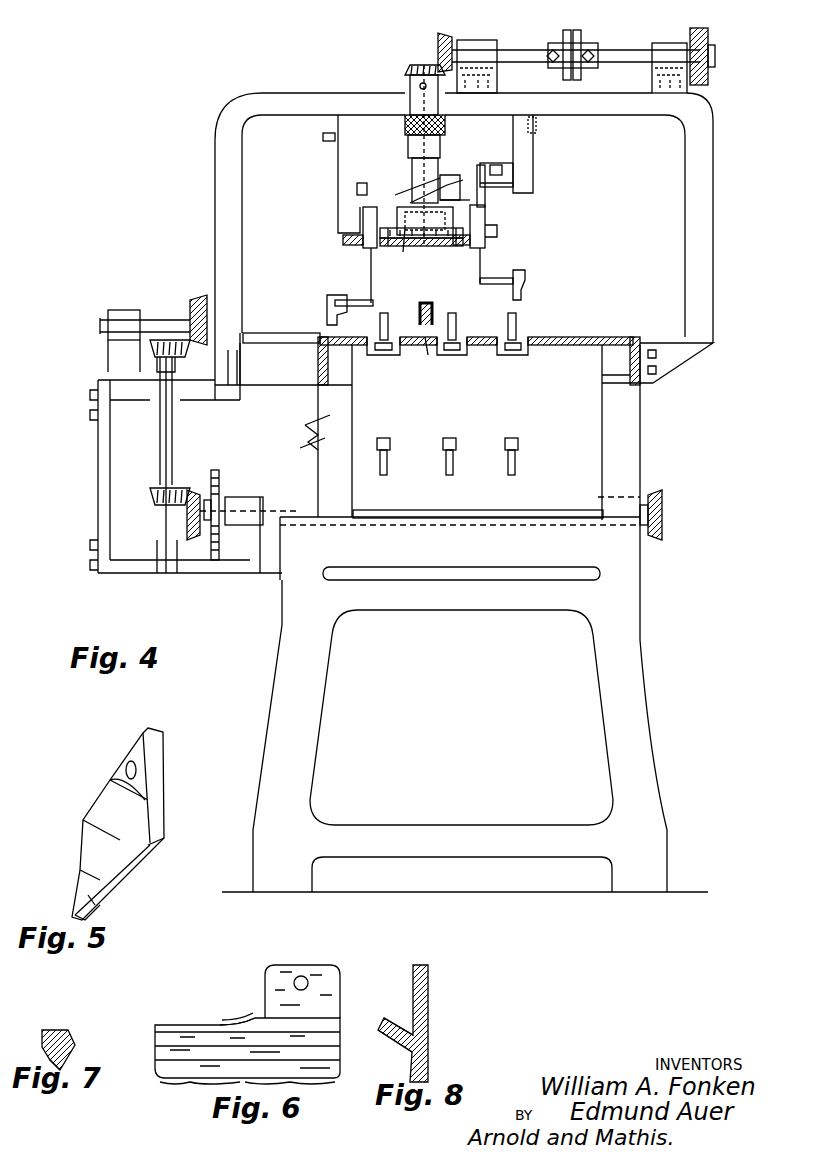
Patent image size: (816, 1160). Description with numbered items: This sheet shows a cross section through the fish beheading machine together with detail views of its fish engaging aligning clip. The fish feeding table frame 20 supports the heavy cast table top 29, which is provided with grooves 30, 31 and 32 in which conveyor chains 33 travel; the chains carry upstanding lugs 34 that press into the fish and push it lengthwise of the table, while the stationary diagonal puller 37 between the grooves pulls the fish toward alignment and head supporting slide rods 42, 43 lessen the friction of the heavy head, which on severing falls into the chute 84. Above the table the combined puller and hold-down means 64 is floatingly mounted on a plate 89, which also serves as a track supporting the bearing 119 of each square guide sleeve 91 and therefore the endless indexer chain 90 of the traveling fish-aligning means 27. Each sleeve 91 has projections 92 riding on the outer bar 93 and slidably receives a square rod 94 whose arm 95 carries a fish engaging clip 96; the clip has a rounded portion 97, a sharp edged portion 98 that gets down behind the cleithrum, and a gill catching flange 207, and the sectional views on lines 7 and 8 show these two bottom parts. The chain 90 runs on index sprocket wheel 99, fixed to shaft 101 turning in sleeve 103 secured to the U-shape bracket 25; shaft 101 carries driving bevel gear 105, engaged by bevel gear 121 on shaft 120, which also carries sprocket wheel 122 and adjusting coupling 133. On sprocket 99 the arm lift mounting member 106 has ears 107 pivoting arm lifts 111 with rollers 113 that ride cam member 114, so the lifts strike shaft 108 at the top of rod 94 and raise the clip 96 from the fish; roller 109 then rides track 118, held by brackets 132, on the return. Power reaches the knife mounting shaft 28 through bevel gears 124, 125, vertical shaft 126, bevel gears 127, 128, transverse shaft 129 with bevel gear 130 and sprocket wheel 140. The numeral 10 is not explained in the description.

In FIG. 4, the head assembly 10 is at (308, 190).
In FIG. 4, the fish feeding table frame 20 is at (596, 352).
In FIG. 4, the U-shape bracket 25 is at (215, 165).
In FIG. 4, the traveling fish-aligning means 27 is at (330, 220).
In FIG. 4, the fish beheading knife mounting shaft 28 is at (100, 326).
In FIG. 4, the table top 29 is at (606, 331).
In FIG. 4, the groove 30 is at (392, 352).
In FIG. 4, the groove 31 is at (460, 352).
In FIG. 4, the groove 32 is at (524, 352).
In FIG. 4, the conveyor chain 33 is at (383, 438).
In FIG. 4, the lug 34 is at (507, 320).
In FIG. 4, the stationary diagonal fish engaging puller 37 is at (426, 356).
In FIG. 4, the head supporting slide rod 42 is at (320, 332).
In FIG. 4, the head supporting slide rod 43 is at (318, 356).
In FIG. 4, the combined puller and hold-down means 64 is at (424, 302).
In FIG. 4, the chute 84 is at (300, 430).
In FIG. 4, the plate 89 is at (423, 246).
In FIG. 4, the endless indexer chain 90 is at (421, 250).
In FIG. 4, the square guide sleeve 91 is at (365, 248).
In FIG. 4, the projection 92 is at (360, 225).
In FIG. 4, the outer bar 93 is at (343, 240).
In FIG. 4, the square rod 94 is at (368, 262).
In FIG. 4, the arm 95 is at (348, 300).
In FIG. 4, the fish engaging clip 96 is at (318, 299).
In FIG. 5, the fish engaging clip 96 is at (172, 781).
In FIG. 7, the fish engaging clip 96 is at (49, 1021).
In FIG. 6, the fish engaging clip 96 is at (255, 1003).
In FIG. 8, the fish engaging clip 96 is at (441, 1012).
In FIG. 5, the rounded portion 97 is at (92, 902).
In FIG. 7, the rounded portion 97 is at (50, 1062).
In FIG. 6, the rounded portion 97 is at (200, 1092).
In FIG. 5, the sharp edged portion 98 is at (147, 845).
In FIG. 6, the sharp edged portion 98 is at (290, 1092).
In FIG. 8, the sharp edged portion 98 is at (410, 1080).
In FIG. 4, the index sprocket wheel 99 is at (404, 252).
In FIG. 4, the shaft 101 is at (410, 95).
In FIG. 4, the sleeve 103 is at (440, 150).
In FIG. 4, the driving bevel gear 105 is at (408, 68).
In FIG. 4, the arm lift mounting member 106 is at (455, 218).
In FIG. 4, the upstanding ear 107 is at (465, 195).
In FIG. 4, the shaft 108 is at (365, 185).
In FIG. 4, the roller 109 is at (358, 183).
In FIG. 4, the arm lift 111 is at (490, 192).
In FIG. 4, the roller 113 is at (412, 192).
In FIG. 4, the cam member 114 is at (470, 205).
In FIG. 4, the track 118 is at (505, 180).
In FIG. 4, the bearing 119 is at (485, 248).
In FIG. 4, the shaft 120 is at (515, 52).
In FIG. 4, the bevel gear 121 is at (438, 40).
In FIG. 4, the sprocket wheel 122 is at (705, 36).
In FIG. 4, the bevel gear 124 is at (190, 300).
In FIG. 4, the bevel gear 125 is at (155, 340).
In FIG. 4, the vertically disposed shaft 126 is at (160, 440).
In FIG. 4, the bevel gear 127 is at (155, 495).
In FIG. 4, the bevel gear 128 is at (187, 520).
In FIG. 4, the shaft 129 is at (405, 512).
In FIG. 4, the bevel gear 130 is at (660, 495).
In FIG. 4, the bracket 132 is at (520, 145).
In FIG. 4, the adjusting coupling 133 is at (582, 38).
In FIG. 4, the sprocket wheel 140 is at (218, 478).
In FIG. 5, the gill catching flange 207 is at (108, 790).
In FIG. 6, the gill catching flange 207 is at (222, 1020).
In FIG. 8, the gill catching flange 207 is at (384, 1018).
In FIG. 6, the section line 7 is at (165, 1078).
In FIG. 6, the section line 8 is at (317, 1093).